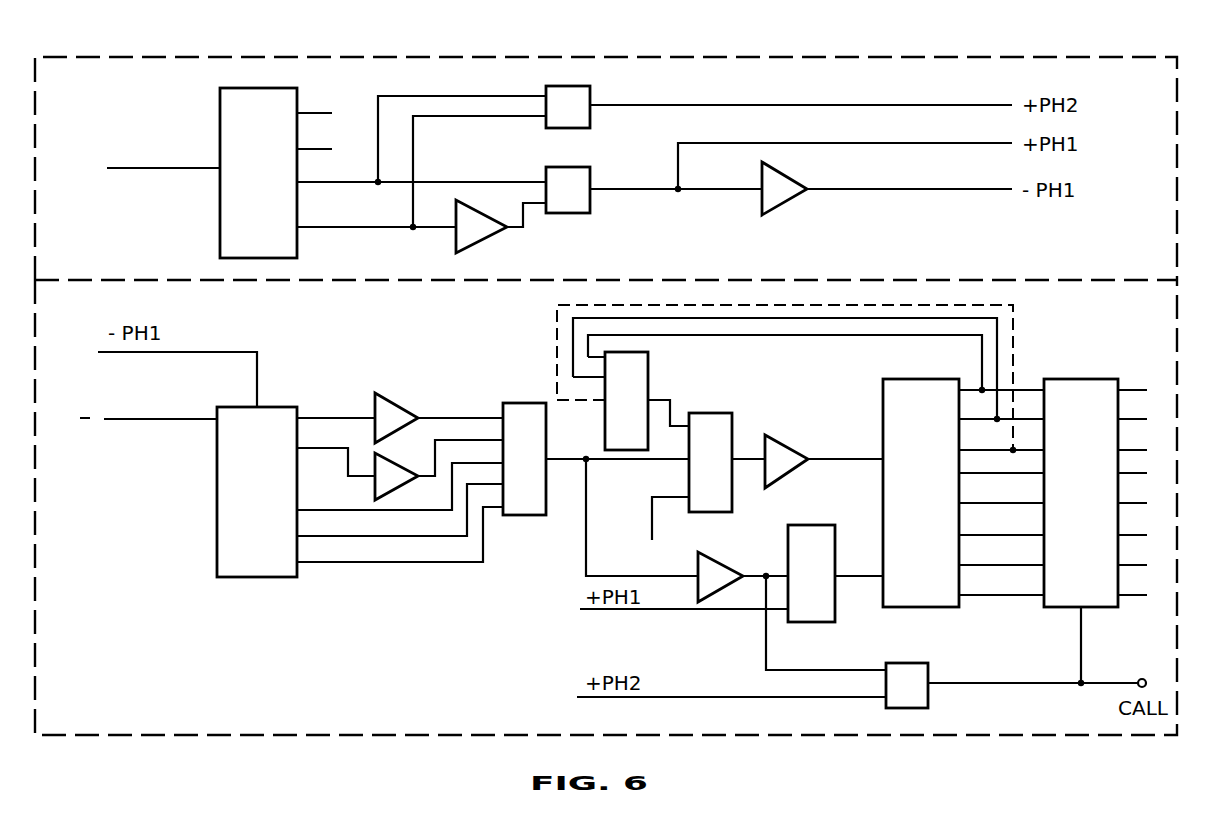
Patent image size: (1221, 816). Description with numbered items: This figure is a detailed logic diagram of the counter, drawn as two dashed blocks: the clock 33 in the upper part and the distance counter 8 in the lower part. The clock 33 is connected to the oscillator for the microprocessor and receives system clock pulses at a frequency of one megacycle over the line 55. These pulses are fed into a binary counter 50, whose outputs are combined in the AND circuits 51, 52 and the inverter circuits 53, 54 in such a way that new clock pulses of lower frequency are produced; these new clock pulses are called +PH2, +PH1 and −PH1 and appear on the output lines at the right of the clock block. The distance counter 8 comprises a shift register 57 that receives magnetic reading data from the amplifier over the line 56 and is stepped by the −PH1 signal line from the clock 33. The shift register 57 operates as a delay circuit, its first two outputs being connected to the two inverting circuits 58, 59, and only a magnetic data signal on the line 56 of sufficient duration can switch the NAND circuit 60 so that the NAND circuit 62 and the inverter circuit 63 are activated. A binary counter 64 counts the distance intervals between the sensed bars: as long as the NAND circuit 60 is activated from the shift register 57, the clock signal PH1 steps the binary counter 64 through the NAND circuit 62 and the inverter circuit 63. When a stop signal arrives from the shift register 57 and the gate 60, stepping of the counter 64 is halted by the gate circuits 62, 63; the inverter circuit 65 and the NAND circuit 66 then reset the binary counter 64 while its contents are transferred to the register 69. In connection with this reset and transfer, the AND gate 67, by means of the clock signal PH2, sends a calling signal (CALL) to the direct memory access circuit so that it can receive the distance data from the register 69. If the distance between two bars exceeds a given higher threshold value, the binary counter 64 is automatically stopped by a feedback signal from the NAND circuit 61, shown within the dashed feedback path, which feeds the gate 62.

The distance counter 8 is at (1178, 373).
The clock 33 is at (1180, 178).
The binary counter 50 is at (222, 109).
The AND circuit 51 is at (592, 90).
The AND circuit 52 is at (592, 171).
The inverter circuit 53 is at (490, 234).
The inverter circuit 54 is at (793, 196).
The line 55 is at (133, 167).
The line 56 is at (141, 424).
The shift register 57 is at (217, 494).
The inverting circuit 58 is at (397, 405).
The inverting circuit 59 is at (397, 462).
The NAND circuit 60 is at (531, 519).
The NAND circuit 61 is at (650, 366).
The NAND circuit 62 is at (713, 410).
The inverter circuit 63 is at (787, 448).
The binary counter 64 is at (930, 369).
The inverter circuit 65 is at (733, 563).
The NAND circuit 66 is at (825, 525).
The AND gate 67 is at (905, 663).
The register 69 is at (1083, 379).